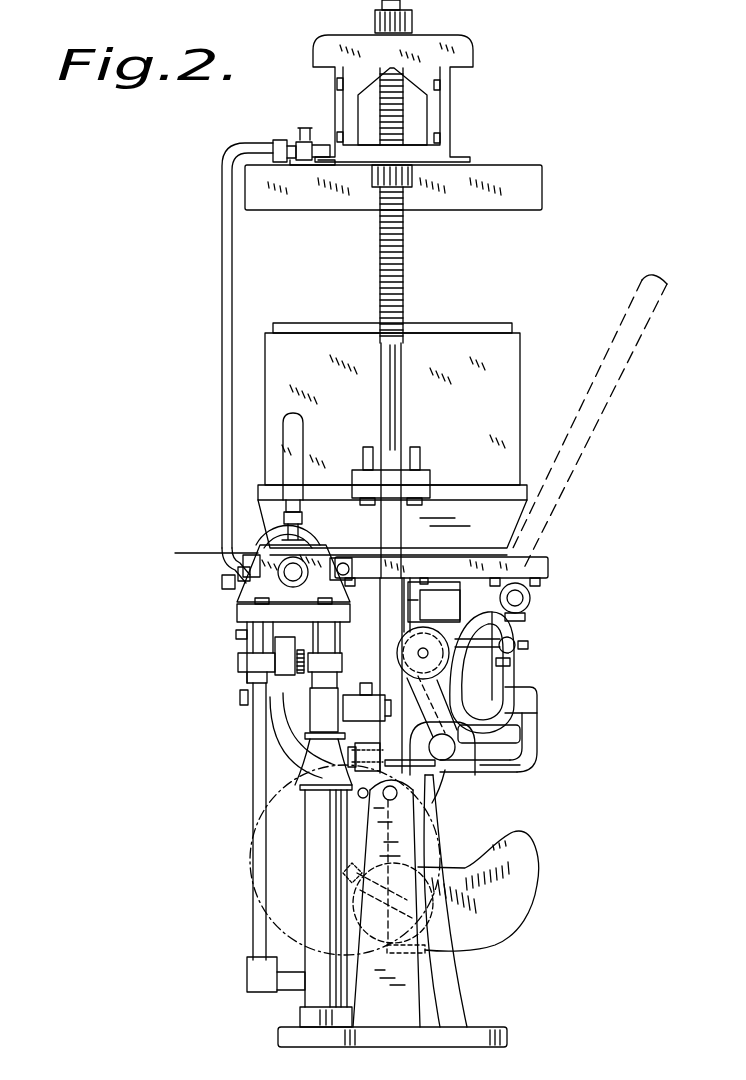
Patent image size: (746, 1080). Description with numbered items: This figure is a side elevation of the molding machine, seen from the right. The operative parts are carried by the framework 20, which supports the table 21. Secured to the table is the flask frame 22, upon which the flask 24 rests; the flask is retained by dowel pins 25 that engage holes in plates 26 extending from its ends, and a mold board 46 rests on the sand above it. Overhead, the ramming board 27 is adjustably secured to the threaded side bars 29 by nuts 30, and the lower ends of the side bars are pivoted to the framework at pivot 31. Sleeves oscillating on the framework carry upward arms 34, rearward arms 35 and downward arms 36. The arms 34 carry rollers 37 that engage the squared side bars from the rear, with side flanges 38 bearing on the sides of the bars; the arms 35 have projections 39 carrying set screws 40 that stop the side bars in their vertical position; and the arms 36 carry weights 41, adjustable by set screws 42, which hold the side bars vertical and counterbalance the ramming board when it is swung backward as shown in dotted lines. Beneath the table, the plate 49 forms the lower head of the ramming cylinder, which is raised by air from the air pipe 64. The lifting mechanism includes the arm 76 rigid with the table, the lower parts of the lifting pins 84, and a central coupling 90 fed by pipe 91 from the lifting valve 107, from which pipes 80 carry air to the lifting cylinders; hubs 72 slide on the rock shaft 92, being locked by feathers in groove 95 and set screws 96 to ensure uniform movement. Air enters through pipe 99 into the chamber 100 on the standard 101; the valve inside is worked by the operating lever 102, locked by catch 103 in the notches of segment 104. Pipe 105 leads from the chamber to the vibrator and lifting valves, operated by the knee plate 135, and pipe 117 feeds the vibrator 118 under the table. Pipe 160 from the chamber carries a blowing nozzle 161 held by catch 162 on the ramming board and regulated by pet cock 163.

The framework 20 is at (392, 911).
The table 21 is at (361, 592).
The flask frame 22 is at (392, 527).
The flask 24 is at (392, 416).
The dowel pins 25 is at (368, 455).
The plates 26 is at (432, 478).
The ramming board 27 is at (318, 214).
The threaded side bars 29 is at (400, 390).
The nuts 30 is at (406, 16).
The pivot 31 is at (400, 802).
The arms 34 is at (432, 706).
The arms 35 is at (442, 778).
The arms 36 is at (422, 830).
The rollers 37 is at (423, 653).
The side flanges 38 is at (390, 675).
The projections 39 is at (378, 755).
The set screws 40 is at (376, 762).
The weights 41 is at (478, 891).
The set screws 42 is at (345, 860).
The mold board 46 is at (317, 328).
The plate 49 is at (460, 750).
The air pipe 64 is at (262, 767).
The hubs 72 is at (515, 656).
The arm 76 is at (416, 603).
The pipes 80 is at (525, 733).
The lower parts of the lifting pins 84 is at (434, 600).
The central coupling 90 is at (535, 729).
The pipe 91 is at (539, 773).
The rock shaft 92 is at (515, 664).
The groove 95 is at (522, 641).
The set screws 96 is at (530, 646).
The pipe 99 is at (315, 640).
The chamber 100 is at (293, 573).
The standard 101 is at (316, 947).
The operating lever 102 is at (303, 433).
The catch 103 is at (278, 536).
The segment 104 is at (203, 568).
The pipe 105 is at (343, 563).
The lifting valve 107 is at (268, 652).
The pipe 117 is at (482, 672).
The vibrator 118 is at (532, 599).
The knee plate 135 is at (246, 692).
The pipe 160 is at (222, 262).
The fitting 161 is at (290, 150).
The catch 162 is at (314, 140).
The pet cock 163 is at (302, 128).